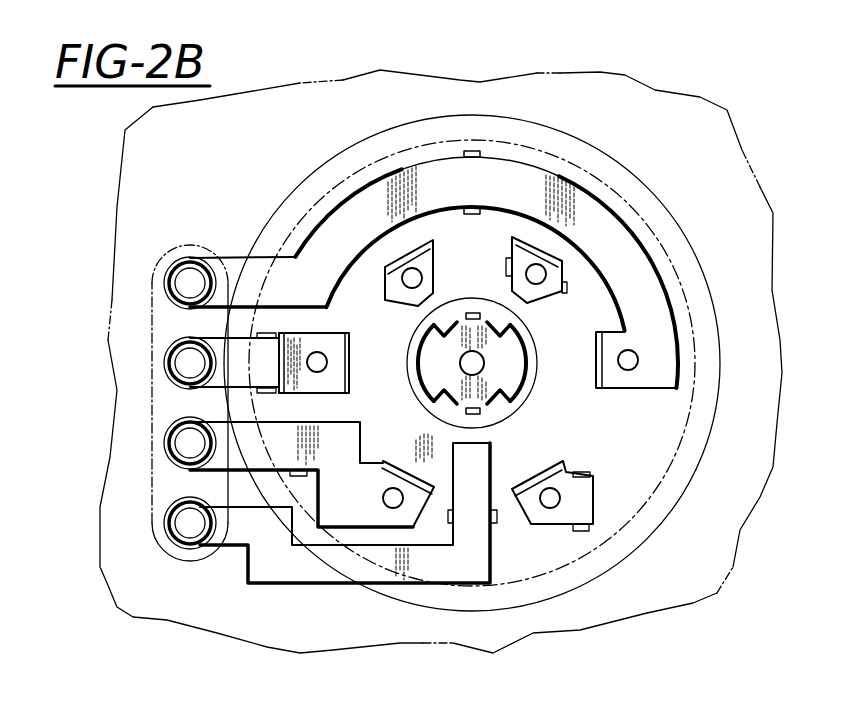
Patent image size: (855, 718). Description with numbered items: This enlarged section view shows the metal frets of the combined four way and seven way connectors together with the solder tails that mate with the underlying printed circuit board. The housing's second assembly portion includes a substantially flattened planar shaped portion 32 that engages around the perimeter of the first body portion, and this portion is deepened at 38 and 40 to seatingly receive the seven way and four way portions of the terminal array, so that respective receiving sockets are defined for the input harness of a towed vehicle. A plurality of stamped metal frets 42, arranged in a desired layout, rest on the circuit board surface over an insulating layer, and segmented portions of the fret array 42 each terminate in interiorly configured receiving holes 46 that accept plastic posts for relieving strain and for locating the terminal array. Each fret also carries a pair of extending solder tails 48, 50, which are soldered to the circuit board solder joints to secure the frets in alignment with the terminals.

The planar shaped portion 32 is at (357, 118).
The deepened portion 38 is at (600, 160).
The deepened portion 40 is at (172, 250).
The stamped metal frets 42 is at (327, 237).
The receiving holes 46 is at (540, 275).
The solder tail 48 is at (473, 313).
The solder tail 50 is at (473, 414).